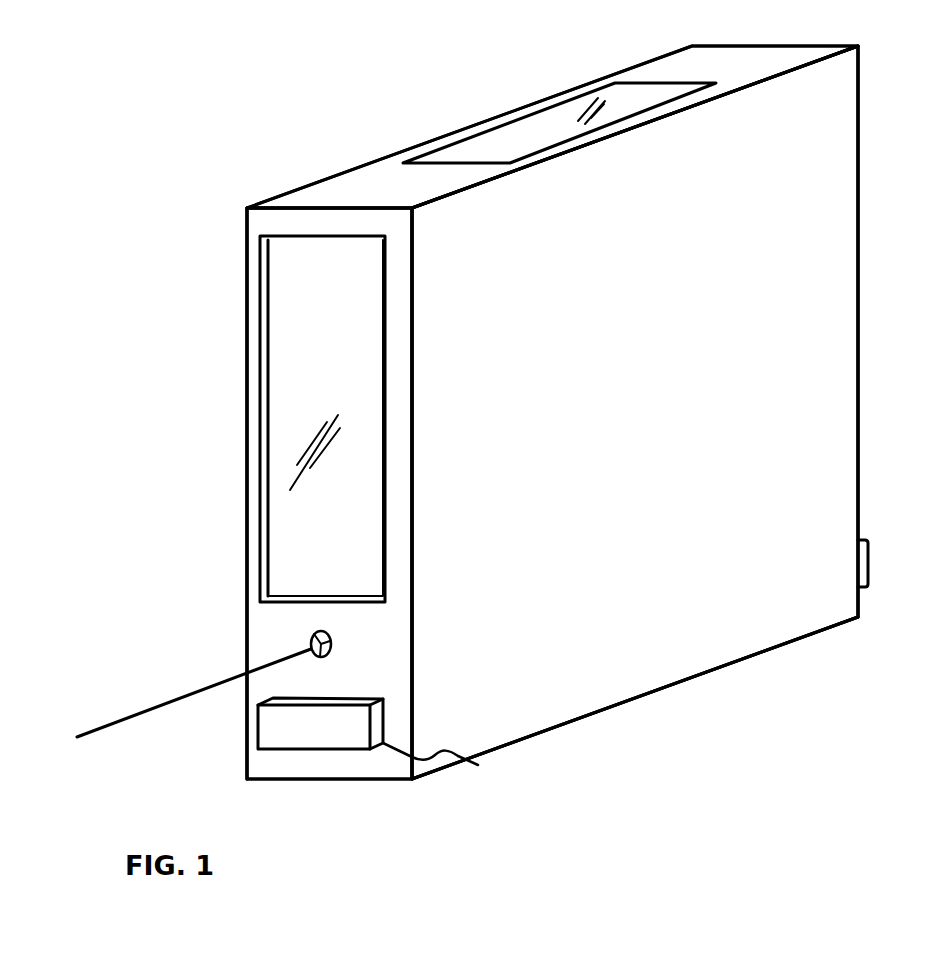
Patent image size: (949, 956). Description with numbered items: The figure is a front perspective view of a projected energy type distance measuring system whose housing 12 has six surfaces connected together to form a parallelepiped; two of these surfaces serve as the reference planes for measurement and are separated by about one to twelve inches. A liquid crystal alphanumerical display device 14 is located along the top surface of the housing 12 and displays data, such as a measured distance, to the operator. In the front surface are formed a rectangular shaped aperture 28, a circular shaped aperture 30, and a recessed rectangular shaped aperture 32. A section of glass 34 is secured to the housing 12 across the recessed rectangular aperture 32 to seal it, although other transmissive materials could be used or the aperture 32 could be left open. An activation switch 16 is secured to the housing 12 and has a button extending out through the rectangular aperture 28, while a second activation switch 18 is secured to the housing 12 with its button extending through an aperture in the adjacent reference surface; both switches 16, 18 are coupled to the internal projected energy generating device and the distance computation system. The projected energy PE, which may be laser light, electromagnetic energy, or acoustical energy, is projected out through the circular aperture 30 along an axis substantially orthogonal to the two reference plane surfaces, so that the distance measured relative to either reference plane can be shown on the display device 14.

The housing 12 is at (858, 67).
The alphanumerical display device 14 is at (530, 126).
The activation switch 16 is at (316, 749).
The activation switch 18 is at (868, 560).
The rectangular shaped aperture 28 is at (447, 766).
The circular shaped aperture 30 is at (345, 645).
The recessed rectangular shaped aperture 32 is at (390, 544).
The section of glass 34 is at (280, 264).
The projected energy PE is at (205, 690).